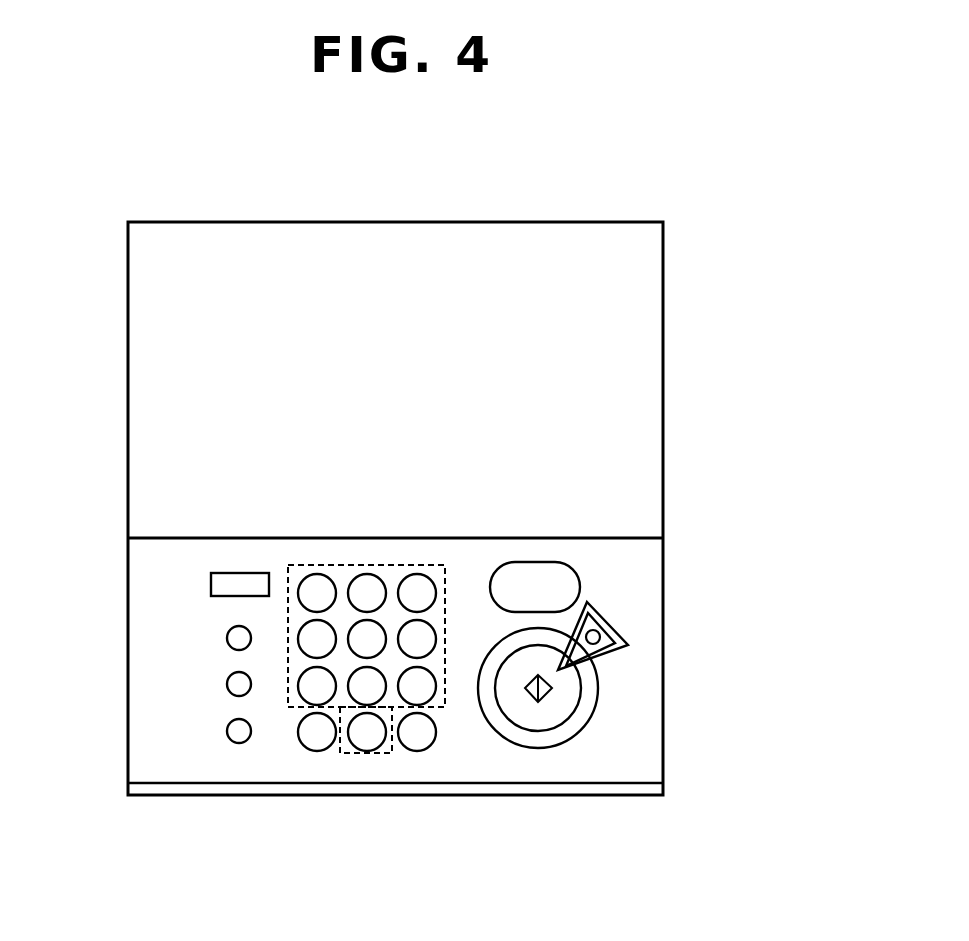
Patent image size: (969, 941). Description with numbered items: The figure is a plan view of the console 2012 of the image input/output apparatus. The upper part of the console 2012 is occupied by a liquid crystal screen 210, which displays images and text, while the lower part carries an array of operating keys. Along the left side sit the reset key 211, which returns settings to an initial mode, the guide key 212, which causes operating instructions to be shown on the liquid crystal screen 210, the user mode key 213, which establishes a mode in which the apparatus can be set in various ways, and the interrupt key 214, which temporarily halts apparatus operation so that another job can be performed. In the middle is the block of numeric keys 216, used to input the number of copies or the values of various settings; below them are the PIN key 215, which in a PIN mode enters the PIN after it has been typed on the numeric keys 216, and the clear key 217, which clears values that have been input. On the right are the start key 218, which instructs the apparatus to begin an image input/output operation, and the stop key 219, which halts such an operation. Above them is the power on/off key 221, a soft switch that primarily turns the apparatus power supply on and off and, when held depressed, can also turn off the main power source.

The liquid crystal screen 210 is at (637, 412).
The console 2012 is at (663, 625).
The reset key 211 is at (211, 586).
The guide key 212 is at (227, 638).
The user mode key 213 is at (227, 684).
The interrupt key 214 is at (227, 731).
The PIN key 215 is at (317, 751).
The numeric keys 216 is at (369, 753).
The clear key 217 is at (416, 751).
The start key 218 is at (538, 715).
The stop key 219 is at (600, 657).
The power on/off key 221 is at (580, 577).